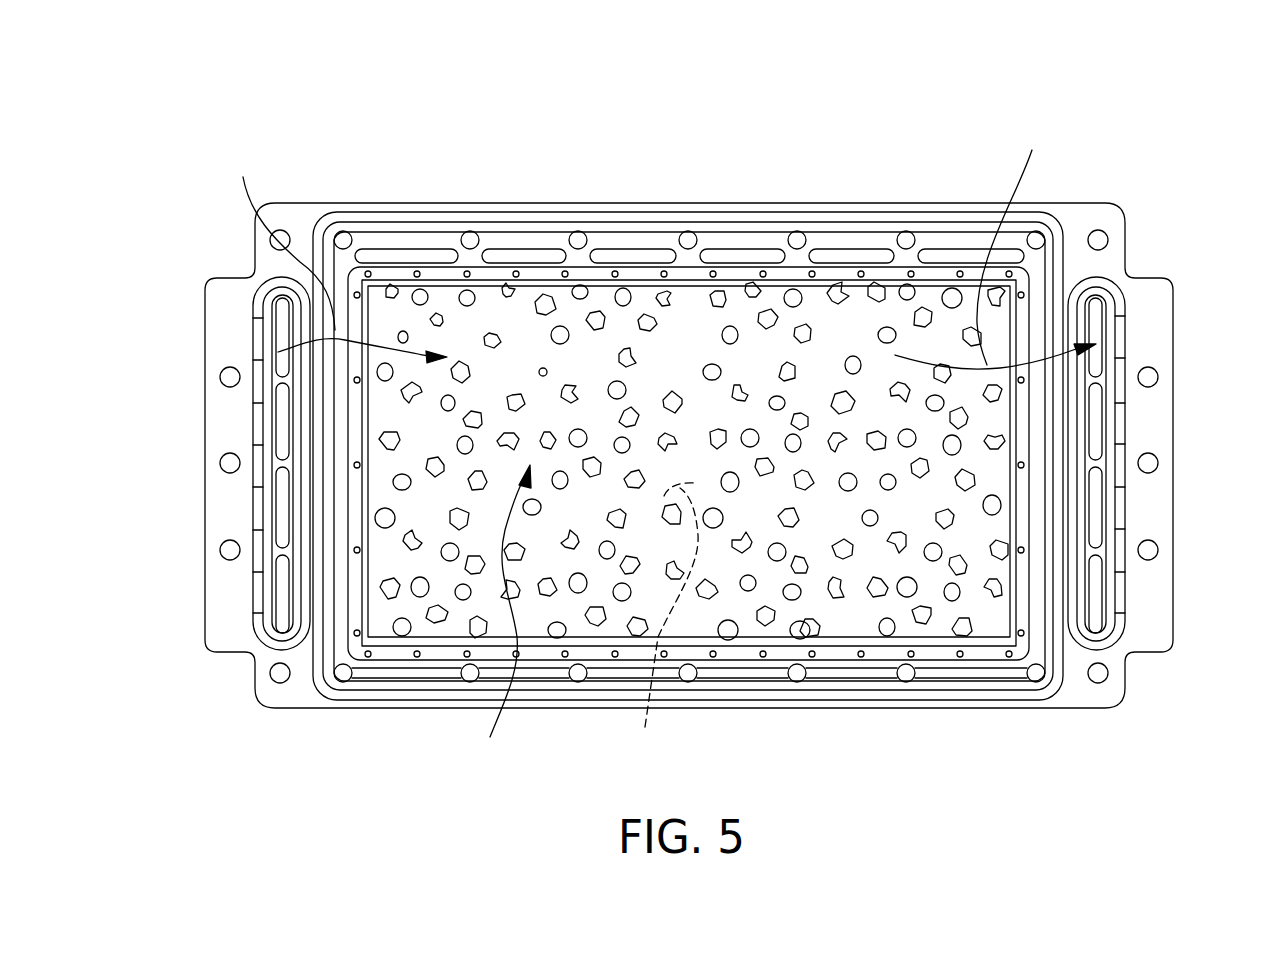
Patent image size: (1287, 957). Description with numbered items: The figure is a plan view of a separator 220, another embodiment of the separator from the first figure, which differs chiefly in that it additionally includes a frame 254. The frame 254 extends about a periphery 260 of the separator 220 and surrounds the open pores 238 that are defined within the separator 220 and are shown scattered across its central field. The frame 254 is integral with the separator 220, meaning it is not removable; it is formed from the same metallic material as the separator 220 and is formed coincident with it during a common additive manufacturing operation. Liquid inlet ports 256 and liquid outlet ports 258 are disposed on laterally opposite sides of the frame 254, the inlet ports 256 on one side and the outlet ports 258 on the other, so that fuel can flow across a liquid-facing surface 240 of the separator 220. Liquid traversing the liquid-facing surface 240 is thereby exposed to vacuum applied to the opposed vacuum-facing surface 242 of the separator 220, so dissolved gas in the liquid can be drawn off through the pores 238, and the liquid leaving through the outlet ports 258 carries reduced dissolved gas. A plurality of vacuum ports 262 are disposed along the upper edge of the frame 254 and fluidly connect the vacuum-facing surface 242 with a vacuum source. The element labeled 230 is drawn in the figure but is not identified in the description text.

The separator 220 is at (681, 441).
The degassing chamber 230 is at (953, 597).
The open pores 238 is at (498, 620).
The liquid-facing surface 240 is at (848, 574).
The vacuum-facing surface 242 is at (660, 629).
The frame 254 is at (302, 692).
The liquid inlet ports 256 is at (280, 338).
The liquid outlet ports 258 is at (1095, 306).
The periphery 260 is at (690, 283).
The vacuum ports 262 is at (405, 258).